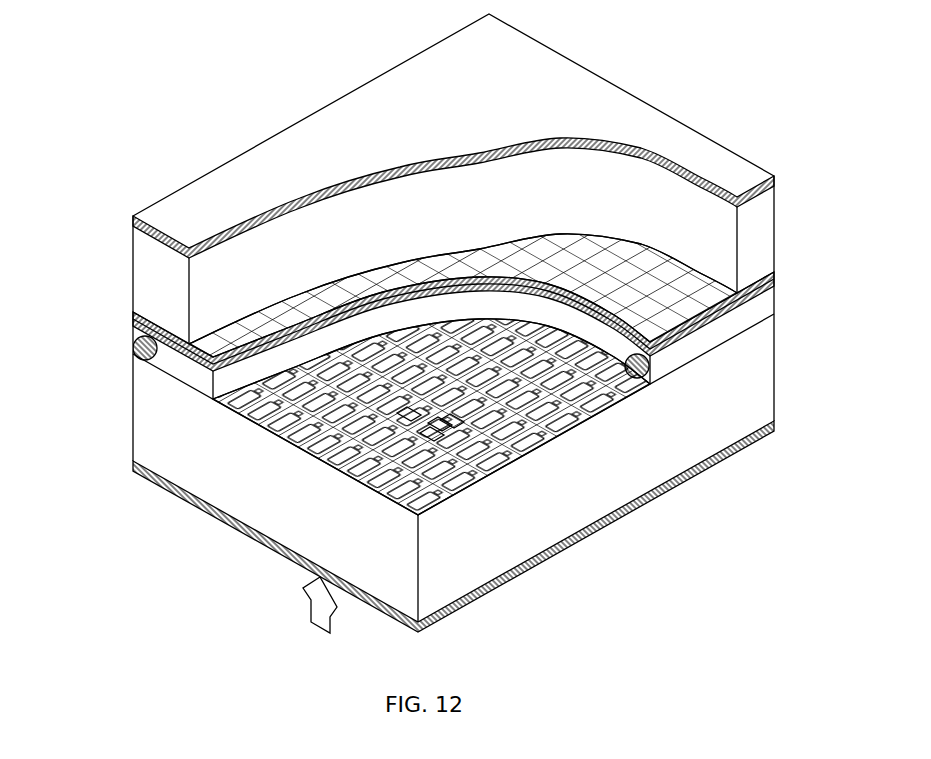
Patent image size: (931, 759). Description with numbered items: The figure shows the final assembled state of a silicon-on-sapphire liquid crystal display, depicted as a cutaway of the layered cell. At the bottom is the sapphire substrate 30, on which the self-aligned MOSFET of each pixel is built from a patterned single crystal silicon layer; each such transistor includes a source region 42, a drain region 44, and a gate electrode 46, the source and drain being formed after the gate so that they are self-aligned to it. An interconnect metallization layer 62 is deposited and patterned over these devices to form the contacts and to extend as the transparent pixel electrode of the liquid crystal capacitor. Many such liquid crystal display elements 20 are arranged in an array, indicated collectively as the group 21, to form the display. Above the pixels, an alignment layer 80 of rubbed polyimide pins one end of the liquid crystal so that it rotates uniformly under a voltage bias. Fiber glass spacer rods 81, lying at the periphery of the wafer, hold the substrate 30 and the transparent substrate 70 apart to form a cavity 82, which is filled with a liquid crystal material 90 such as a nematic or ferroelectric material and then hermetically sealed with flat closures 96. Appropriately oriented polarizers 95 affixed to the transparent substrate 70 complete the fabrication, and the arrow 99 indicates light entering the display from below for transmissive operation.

The liquid crystal display element 20 is at (350, 450).
The array of signal lines 21 is at (345, 434).
The sapphire substrate 30 is at (133, 420).
The source region 42 is at (428, 423).
The drain region 44 is at (440, 420).
The gate electrode 46 is at (397, 413).
The interconnect metallization layer 62 is at (420, 433).
The transparent substrate 70 is at (133, 257).
The alignment layer 80 is at (187, 340).
The spacer rods 81 is at (133, 357).
The cavity 82 is at (640, 378).
The liquid crystal material 90 is at (612, 352).
The polarizers 95 is at (774, 182).
The flat closures 96 is at (133, 353).
The backlight 99 is at (308, 603).